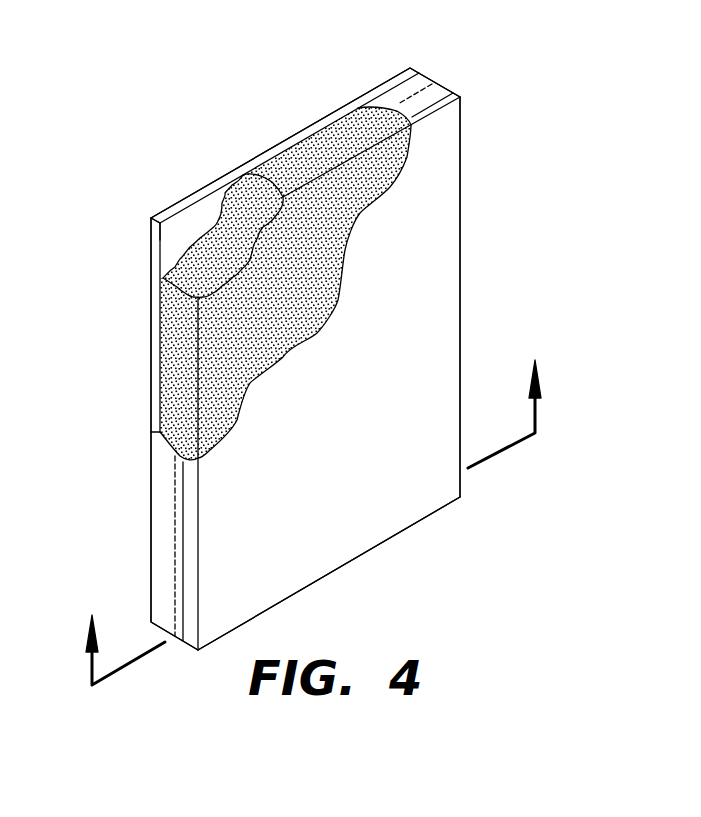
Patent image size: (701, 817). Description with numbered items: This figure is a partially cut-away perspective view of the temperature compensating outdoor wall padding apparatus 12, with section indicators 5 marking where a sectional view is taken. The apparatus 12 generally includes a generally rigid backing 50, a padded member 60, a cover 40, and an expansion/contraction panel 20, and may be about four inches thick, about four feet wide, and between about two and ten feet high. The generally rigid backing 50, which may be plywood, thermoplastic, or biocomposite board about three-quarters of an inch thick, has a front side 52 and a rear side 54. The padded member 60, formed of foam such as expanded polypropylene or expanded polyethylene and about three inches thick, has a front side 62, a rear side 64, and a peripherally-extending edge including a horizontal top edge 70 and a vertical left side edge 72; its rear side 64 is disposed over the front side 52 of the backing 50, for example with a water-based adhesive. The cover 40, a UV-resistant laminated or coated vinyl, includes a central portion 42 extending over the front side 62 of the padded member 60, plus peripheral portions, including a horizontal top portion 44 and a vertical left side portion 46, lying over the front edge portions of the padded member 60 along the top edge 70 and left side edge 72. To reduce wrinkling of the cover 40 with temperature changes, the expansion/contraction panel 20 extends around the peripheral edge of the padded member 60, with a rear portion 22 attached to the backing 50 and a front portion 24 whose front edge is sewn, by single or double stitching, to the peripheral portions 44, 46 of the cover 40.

The temperature compensating outdoor wall padding apparatus 12 is at (160, 95).
The expansion/contraction panel 20 is at (402, 88).
The rear portion 22 is at (158, 540).
The front portion 24 is at (170, 487).
The cover 40 is at (418, 240).
The central portion 42 is at (449, 284).
The horizontal top portion 44 is at (447, 92).
The vertical left side portion 46 is at (188, 637).
The generally rigid backing 50 is at (284, 137).
The front side 52 is at (165, 243).
The rear side 54 is at (159, 216).
The padded member 60 is at (176, 368).
The front side 62 is at (263, 353).
The rear side 64 is at (228, 198).
The horizontal top edge 70 is at (347, 128).
The vertical left side edge 72 is at (167, 317).
The section line 5- 5 is at (311, 505).